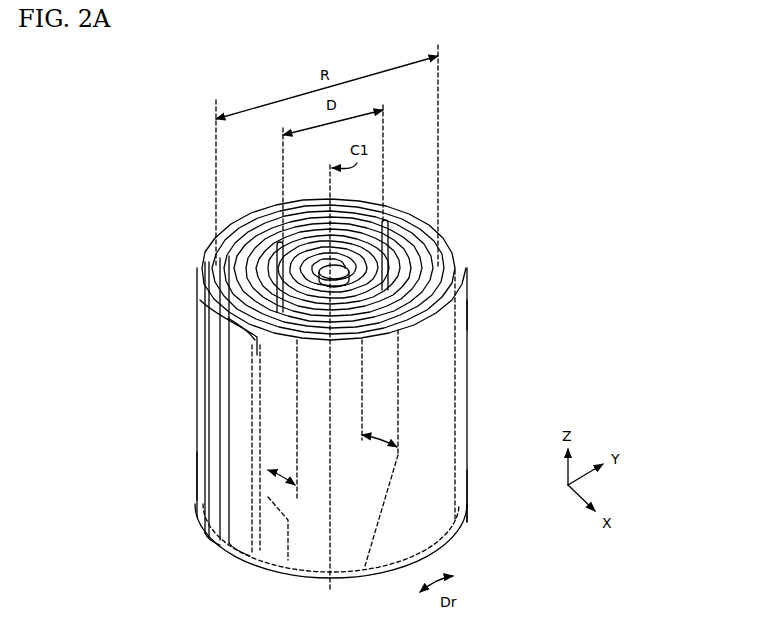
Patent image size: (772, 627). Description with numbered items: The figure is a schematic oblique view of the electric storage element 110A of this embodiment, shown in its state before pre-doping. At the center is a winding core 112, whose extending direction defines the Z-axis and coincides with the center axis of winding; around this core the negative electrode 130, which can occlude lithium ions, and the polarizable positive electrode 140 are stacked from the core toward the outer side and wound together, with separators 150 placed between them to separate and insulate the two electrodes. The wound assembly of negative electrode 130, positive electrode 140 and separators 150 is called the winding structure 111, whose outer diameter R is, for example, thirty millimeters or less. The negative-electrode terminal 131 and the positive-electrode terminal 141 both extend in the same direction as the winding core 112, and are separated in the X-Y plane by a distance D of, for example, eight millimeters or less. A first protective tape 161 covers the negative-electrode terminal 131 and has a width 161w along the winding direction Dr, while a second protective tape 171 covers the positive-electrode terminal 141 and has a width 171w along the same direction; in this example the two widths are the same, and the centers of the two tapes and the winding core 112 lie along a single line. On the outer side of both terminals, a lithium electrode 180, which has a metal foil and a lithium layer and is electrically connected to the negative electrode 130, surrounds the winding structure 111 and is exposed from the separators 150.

The electric storage element 110A is at (461, 204).
The winding structure 111 is at (128, 290).
The winding core 112 is at (467, 300).
The negative electrode 130 is at (199, 390).
The negative-electrode terminal 131 is at (463, 262).
The positive electrode 140 is at (206, 331).
The positive-electrode terminal 141 is at (228, 268).
The separators 150 is at (218, 325).
The protective tape 161 is at (362, 556).
The width 161w is at (399, 443).
The protective tape 171 is at (288, 560).
The width 171w is at (279, 477).
The lithium electrode 180 is at (197, 452).